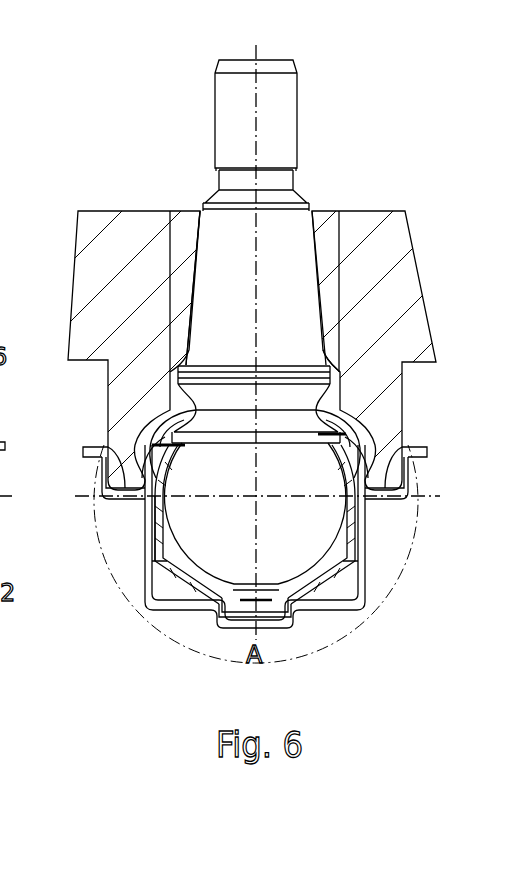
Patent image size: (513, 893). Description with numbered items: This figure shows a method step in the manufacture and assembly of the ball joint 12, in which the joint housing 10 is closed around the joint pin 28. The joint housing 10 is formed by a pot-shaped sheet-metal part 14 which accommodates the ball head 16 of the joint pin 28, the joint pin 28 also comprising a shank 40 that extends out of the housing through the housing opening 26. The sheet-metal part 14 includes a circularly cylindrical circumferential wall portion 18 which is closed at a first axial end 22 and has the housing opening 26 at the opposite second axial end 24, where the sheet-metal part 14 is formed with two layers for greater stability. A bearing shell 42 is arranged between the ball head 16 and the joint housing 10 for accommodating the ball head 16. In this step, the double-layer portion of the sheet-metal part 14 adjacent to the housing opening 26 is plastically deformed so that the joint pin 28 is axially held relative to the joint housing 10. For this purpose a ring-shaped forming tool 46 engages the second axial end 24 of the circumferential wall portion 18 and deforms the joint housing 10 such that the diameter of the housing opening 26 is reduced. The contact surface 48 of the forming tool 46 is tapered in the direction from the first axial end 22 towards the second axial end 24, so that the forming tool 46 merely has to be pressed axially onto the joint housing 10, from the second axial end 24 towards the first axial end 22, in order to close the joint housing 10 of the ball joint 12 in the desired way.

The shank 40 is at (290, 252).
The forming tool 46 is at (85, 290).
The joint pin 28 is at (208, 232).
The second axial end 24 is at (325, 346).
The housing opening 26 is at (332, 424).
The contact surface 48 is at (355, 428).
The circumferential wall portion 18 is at (357, 520).
The first axial end 22 is at (286, 637).
The bearing shell 42 is at (340, 542).
The ball head 16 is at (298, 533).
The joint housing 10 is at (108, 554).
The sheet-metal part 14 is at (150, 552).
The ball joint 12 is at (122, 658).